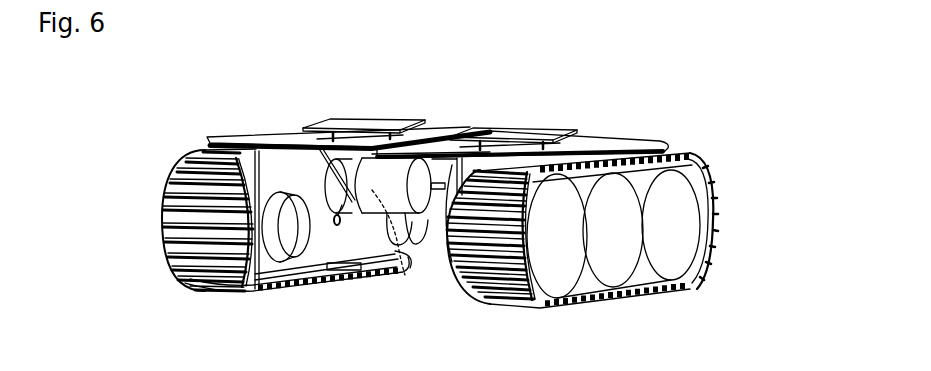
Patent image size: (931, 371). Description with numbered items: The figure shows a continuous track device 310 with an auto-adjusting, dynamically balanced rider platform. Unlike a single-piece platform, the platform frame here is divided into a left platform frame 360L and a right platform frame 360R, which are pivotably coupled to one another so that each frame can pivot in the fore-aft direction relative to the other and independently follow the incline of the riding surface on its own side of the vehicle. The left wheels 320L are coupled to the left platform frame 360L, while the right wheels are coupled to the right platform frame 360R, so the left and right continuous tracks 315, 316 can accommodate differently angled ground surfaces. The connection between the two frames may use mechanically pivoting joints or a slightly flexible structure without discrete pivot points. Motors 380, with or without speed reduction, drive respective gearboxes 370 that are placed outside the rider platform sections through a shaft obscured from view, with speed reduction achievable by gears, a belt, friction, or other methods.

The device 310 is at (166, 114).
The left continuous track 315 is at (507, 298).
The right continuous track 316 is at (215, 297).
The left wheels 320L is at (557, 278).
The right platform frame 360R is at (287, 138).
The left platform frame 360L is at (608, 142).
The gearbox 370 is at (336, 226).
The motor 380 is at (399, 268).